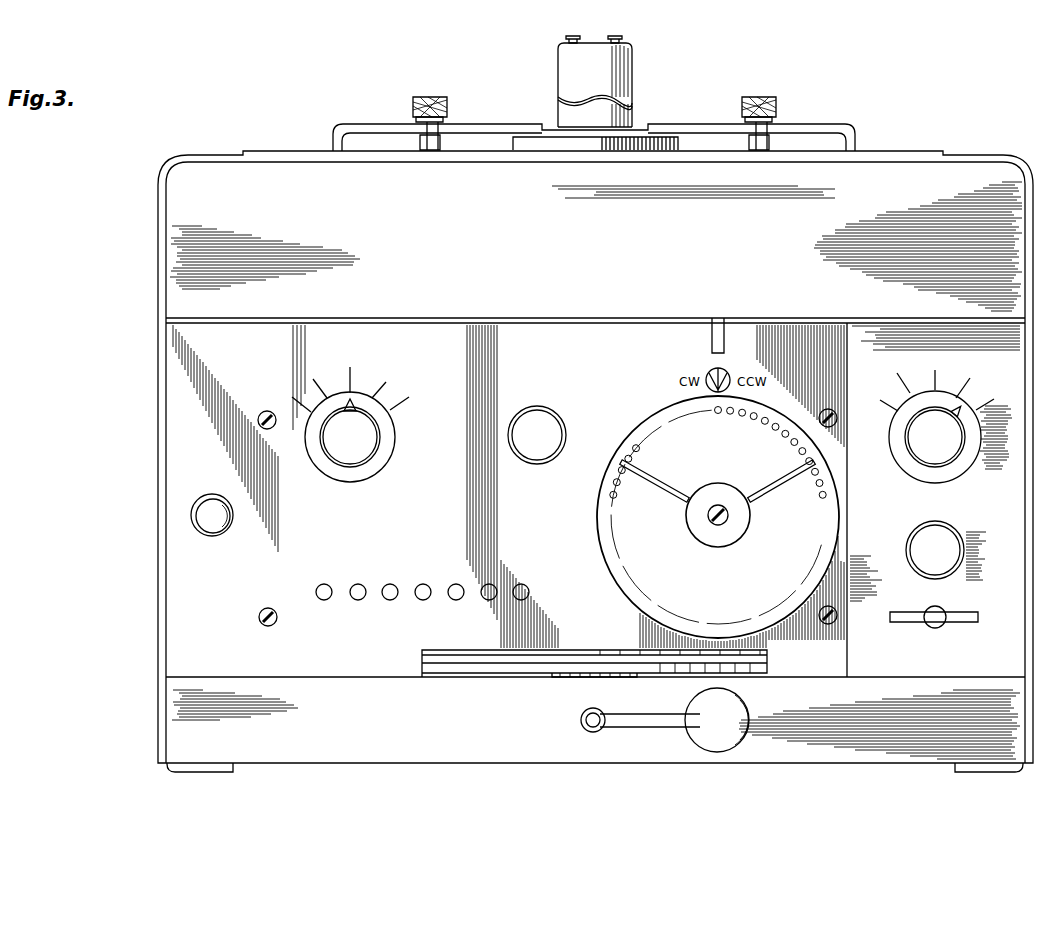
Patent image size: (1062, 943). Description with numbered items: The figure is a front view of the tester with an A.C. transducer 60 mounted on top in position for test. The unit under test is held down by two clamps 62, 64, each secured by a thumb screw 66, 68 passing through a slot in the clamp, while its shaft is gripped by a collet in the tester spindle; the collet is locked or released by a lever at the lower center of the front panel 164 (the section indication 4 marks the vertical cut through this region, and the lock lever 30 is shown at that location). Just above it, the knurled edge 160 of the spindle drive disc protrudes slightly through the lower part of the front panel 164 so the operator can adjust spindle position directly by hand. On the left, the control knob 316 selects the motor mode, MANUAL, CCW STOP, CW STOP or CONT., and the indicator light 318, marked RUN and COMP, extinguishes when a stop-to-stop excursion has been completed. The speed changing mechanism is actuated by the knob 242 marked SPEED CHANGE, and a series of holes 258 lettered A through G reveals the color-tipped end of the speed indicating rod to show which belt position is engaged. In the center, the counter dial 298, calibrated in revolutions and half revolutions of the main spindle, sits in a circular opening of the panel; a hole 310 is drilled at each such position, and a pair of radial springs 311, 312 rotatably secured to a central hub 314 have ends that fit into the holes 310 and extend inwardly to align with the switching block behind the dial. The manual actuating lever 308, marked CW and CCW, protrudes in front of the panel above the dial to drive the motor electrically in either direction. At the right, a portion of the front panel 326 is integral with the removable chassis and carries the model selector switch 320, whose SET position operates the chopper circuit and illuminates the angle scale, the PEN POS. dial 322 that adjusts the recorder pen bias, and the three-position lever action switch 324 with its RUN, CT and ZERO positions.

The section line 4- 4 is at (593, 13).
The lock lever 30 is at (655, 718).
The A.C. transducer 60 is at (566, 67).
The clamp 62 is at (495, 124).
The clamp 64 is at (680, 124).
The thumb screw 66 is at (428, 97).
The thumb screw 68 is at (764, 97).
The knurled edge 160 is at (485, 663).
The front panel 164 is at (188, 420).
The knob 242 is at (558, 414).
The holes 258 is at (324, 600).
The counter dial 298 is at (718, 528).
The manual actuating lever 308 is at (711, 338).
The hole 310 is at (777, 428).
The radial spring 311 is at (791, 480).
The radial spring 312 is at (653, 483).
The central hub 314 is at (718, 537).
The control knob 316 is at (358, 452).
The indicator light 318 is at (192, 518).
The model selector switch 320 is at (950, 448).
The PEN POS. dial 322 is at (950, 555).
The lever action switch 324 is at (938, 622).
The front panel portion 326 is at (934, 480).